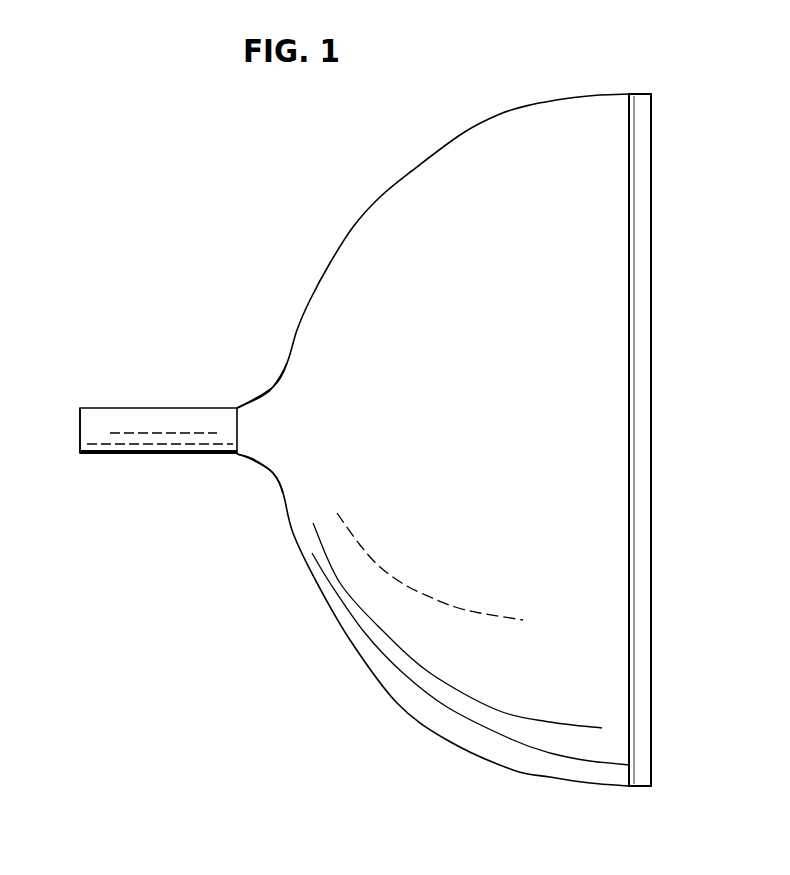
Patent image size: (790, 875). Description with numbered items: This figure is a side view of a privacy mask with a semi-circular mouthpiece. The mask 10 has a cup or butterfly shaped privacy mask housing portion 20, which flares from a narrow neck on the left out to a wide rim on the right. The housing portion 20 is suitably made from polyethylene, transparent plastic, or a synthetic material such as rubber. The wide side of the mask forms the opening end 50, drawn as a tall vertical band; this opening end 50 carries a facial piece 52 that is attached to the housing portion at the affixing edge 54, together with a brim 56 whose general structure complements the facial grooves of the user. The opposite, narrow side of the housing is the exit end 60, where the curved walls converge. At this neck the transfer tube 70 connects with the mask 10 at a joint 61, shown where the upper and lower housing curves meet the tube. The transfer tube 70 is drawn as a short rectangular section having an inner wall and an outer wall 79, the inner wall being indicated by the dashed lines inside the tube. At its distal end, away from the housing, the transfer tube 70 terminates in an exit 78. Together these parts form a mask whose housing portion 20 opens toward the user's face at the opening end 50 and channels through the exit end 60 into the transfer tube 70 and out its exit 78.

The mask 10 is at (553, 97).
The privacy mask housing portion 20 is at (571, 768).
The opening end 50 is at (653, 297).
The facial piece 52 is at (641, 107).
The affixing edge 54 is at (652, 623).
The brim 56 is at (644, 156).
The exit end 60 is at (263, 418).
The joint 61 is at (220, 457).
The transfer tube 70 is at (160, 407).
The exit 78 is at (78, 432).
The outer wall 79 is at (120, 443).